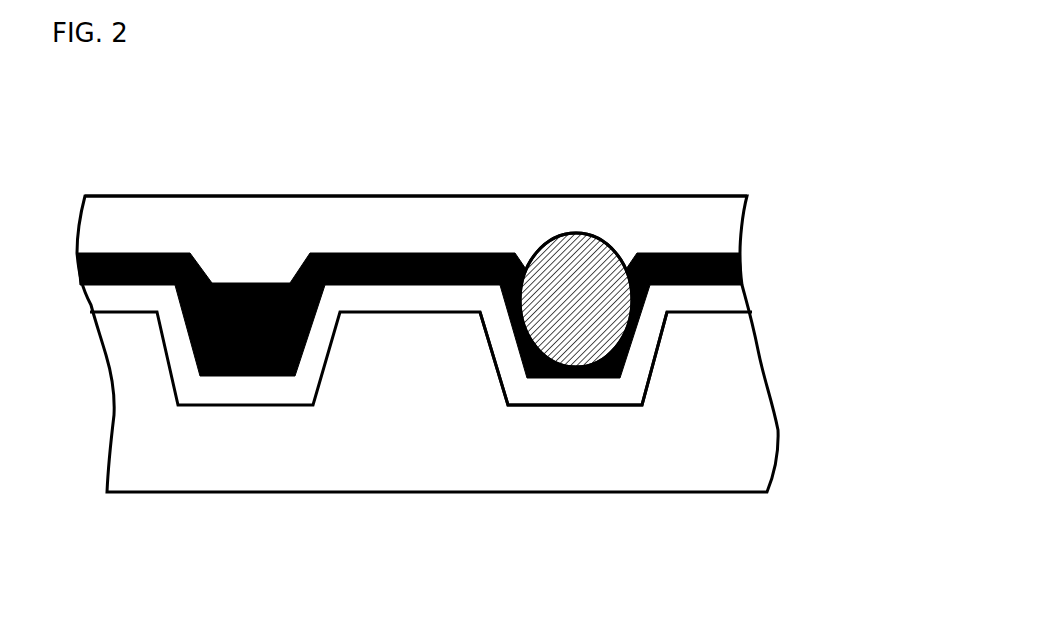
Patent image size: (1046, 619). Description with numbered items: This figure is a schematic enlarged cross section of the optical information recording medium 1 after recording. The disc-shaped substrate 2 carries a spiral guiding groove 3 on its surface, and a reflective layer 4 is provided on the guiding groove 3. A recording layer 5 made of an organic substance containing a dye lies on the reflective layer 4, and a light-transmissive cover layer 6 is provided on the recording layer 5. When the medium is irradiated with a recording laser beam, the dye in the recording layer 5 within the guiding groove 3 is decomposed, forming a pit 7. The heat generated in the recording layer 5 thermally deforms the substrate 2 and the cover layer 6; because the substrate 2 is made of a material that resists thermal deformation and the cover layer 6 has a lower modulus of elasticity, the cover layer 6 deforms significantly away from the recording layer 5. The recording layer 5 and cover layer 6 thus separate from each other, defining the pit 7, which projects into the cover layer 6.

The optical information recording medium 1 is at (436, 172).
The substrate 2 is at (697, 418).
The guiding groove 3 is at (553, 405).
The reflective layer 4 is at (717, 303).
The recording layer 5 is at (740, 257).
The cover layer 6 is at (728, 230).
The pit 7 is at (573, 268).